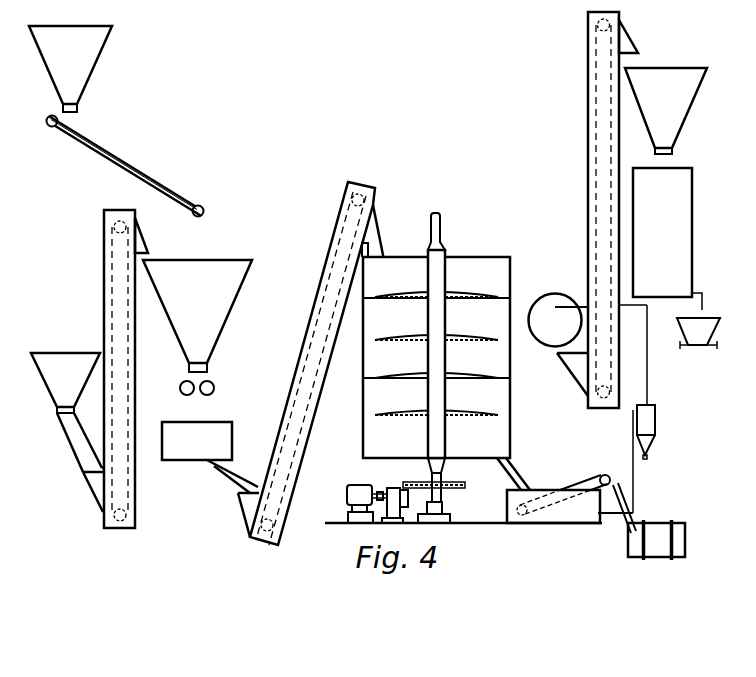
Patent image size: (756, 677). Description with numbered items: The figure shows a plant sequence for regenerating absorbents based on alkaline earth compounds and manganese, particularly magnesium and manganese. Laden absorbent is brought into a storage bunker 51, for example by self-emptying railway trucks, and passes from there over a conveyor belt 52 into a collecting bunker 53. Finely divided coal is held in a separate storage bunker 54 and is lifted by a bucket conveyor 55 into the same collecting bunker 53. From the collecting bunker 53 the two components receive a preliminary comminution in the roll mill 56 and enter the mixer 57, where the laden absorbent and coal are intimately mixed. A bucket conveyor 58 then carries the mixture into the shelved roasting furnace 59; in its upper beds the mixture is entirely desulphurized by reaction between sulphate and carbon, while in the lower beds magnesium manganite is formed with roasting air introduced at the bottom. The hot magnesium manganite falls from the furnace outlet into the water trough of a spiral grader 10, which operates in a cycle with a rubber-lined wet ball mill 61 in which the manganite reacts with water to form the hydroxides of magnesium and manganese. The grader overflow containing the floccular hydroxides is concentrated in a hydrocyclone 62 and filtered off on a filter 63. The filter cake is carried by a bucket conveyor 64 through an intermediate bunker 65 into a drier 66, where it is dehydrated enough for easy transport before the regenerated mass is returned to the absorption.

The spiral grader 10 is at (582, 503).
The storage bunker 51 is at (55, 63).
The conveyor belt 52 is at (182, 201).
The collecting bunker 53 is at (183, 296).
The storage bunker 54 is at (74, 385).
The bucket conveyor 55 is at (129, 402).
The roll mill 56 is at (214, 388).
The mixer 57 is at (180, 453).
The bucket conveyor 58 is at (298, 448).
The shelved roasting furnace 59 is at (461, 450).
The rubber-lined wet ball mill 61 is at (657, 523).
The hydrocyclone 62 is at (638, 428).
The filter 63 is at (550, 305).
The bucket conveyor 64 is at (597, 178).
The intermediate bunker 65 is at (652, 101).
The drier 66 is at (648, 214).